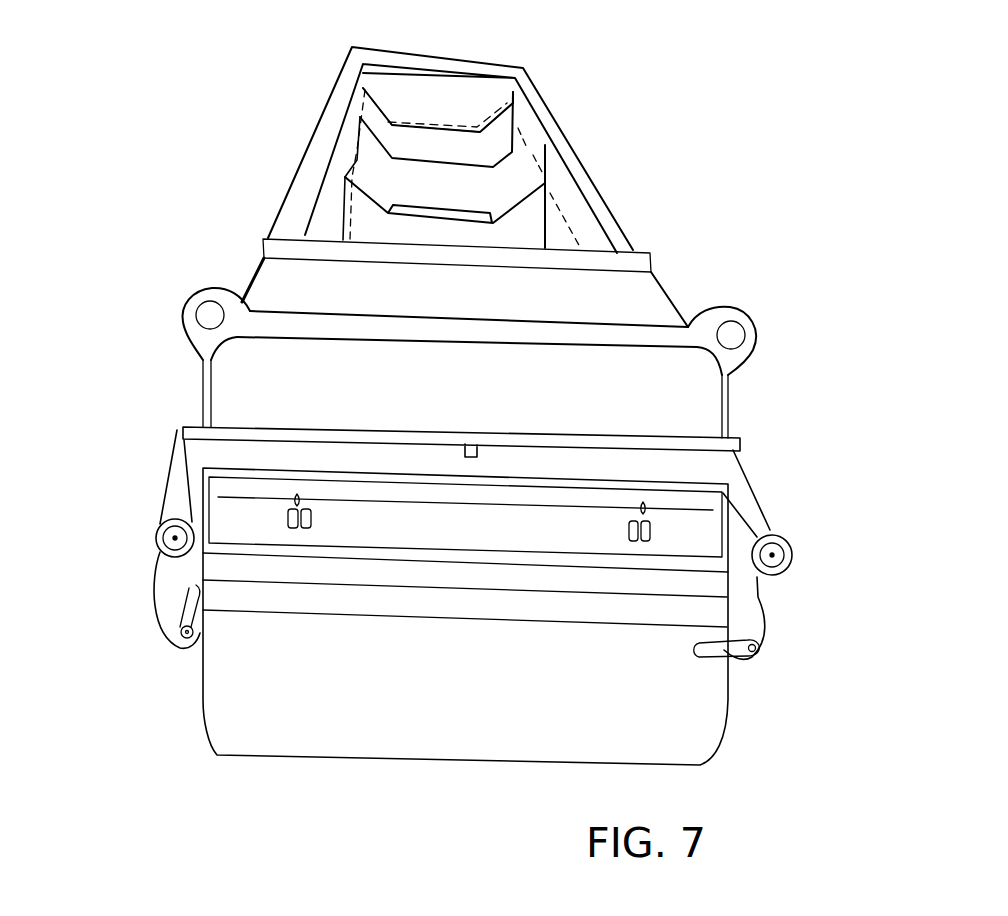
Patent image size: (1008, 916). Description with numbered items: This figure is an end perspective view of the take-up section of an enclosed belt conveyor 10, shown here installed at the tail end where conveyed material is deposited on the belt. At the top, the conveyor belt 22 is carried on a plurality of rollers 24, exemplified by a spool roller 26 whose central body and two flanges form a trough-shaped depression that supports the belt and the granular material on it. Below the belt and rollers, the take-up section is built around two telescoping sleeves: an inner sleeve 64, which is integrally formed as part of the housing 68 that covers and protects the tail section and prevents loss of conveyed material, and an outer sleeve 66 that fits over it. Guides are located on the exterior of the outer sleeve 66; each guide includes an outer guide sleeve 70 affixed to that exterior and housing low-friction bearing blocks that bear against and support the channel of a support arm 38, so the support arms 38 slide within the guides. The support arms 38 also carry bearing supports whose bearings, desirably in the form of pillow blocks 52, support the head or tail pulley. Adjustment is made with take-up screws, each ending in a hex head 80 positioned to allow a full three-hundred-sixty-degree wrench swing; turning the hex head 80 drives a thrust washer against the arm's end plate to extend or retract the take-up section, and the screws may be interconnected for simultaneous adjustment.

The enclosed belt conveyor 10 is at (468, 385).
The conveyor belt 22 is at (590, 177).
The rollers 24 is at (345, 188).
The spool roller 26 is at (543, 142).
The support arms 38 is at (174, 487).
The pillow blocks 52 is at (750, 623).
The inner sleeve 64 is at (707, 420).
The outer sleeve 66 is at (683, 312).
The housing 68 is at (672, 282).
The outer guide sleeve 70 is at (180, 440).
The hex head 80 is at (175, 538).